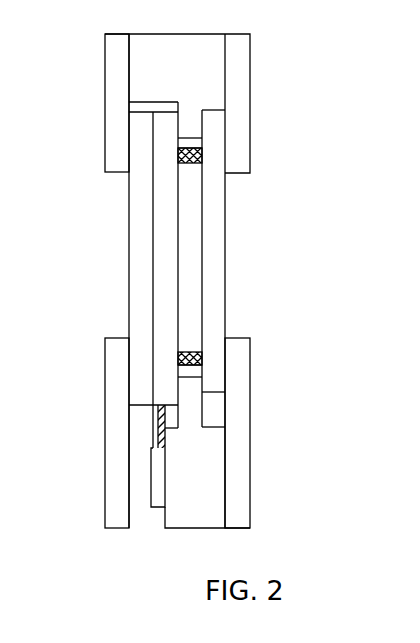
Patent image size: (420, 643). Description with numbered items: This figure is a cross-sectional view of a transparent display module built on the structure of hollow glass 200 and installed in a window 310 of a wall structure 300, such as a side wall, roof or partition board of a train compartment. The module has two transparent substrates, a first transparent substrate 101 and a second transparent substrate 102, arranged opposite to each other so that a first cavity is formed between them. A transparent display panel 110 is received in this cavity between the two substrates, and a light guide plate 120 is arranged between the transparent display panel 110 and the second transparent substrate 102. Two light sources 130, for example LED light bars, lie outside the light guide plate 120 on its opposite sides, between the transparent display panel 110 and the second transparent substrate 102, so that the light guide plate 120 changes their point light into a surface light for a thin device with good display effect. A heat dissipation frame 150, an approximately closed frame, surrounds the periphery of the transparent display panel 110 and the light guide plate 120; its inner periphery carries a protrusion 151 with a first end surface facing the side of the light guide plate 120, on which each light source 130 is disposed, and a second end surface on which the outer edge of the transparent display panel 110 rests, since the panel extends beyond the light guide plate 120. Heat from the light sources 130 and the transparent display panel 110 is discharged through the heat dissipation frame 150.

The heat dissipation frame 150 is at (143, 52).
The wall structure 300 is at (237, 67).
The hollow glass 200 is at (129, 192).
The first transparent substrate 101 is at (137, 235).
The transparent display panel 110 is at (165, 258).
The light guide plate 120 is at (192, 295).
The window 310 is at (231, 235).
The second transparent substrate 102 is at (217, 202).
The protrusion 151 is at (190, 118).
The light source 130 is at (197, 143).